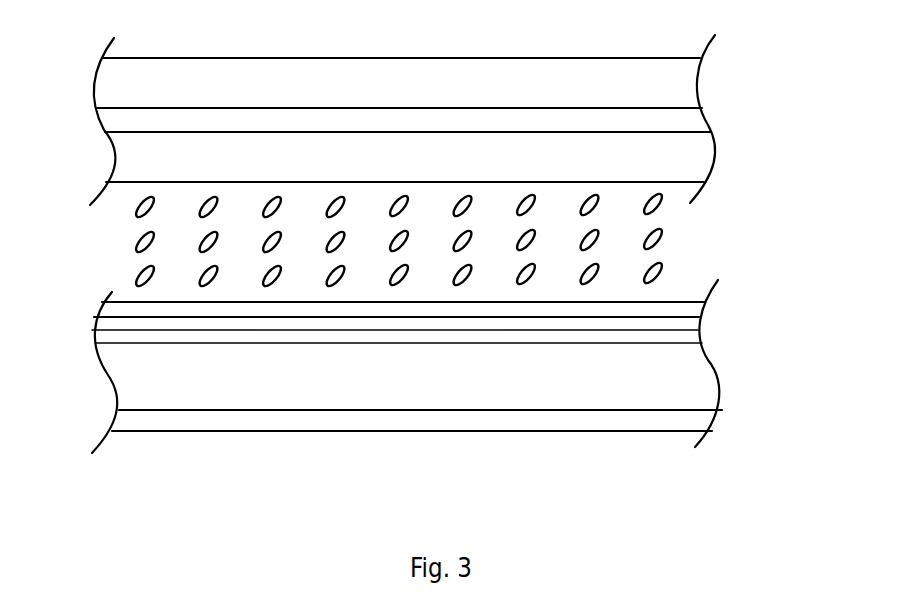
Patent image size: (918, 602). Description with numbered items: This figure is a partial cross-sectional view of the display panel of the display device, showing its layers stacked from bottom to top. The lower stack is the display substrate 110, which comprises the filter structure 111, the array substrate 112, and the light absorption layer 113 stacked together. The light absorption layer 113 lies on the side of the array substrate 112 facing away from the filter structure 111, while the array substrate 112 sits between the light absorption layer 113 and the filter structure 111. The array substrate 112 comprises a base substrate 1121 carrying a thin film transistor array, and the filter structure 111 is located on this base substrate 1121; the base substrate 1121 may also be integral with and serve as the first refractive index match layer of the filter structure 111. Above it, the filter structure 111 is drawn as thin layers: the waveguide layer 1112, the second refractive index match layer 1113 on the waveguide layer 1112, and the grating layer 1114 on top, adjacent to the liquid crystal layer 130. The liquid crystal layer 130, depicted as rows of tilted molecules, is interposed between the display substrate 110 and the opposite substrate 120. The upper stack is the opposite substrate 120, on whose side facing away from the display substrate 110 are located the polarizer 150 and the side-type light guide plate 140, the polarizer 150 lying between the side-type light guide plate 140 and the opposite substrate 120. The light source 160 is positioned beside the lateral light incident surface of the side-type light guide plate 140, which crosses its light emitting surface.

The display substrate 110 is at (90, 305).
The filter structure 111 is at (795, 257).
The waveguide layer 1112 is at (703, 340).
The second refractive index match layer 1113 is at (707, 322).
The grating layer 1114 is at (710, 305).
The array substrate 112 is at (420, 426).
The base substrate 1121 is at (307, 383).
The light absorption layer 113 is at (472, 418).
The opposite substrate 120 is at (130, 160).
The liquid crystal layer 130 is at (130, 253).
The side-type light guide plate 140 is at (662, 90).
The polarizer 150 is at (672, 120).
The light source 160 is at (441, 114).